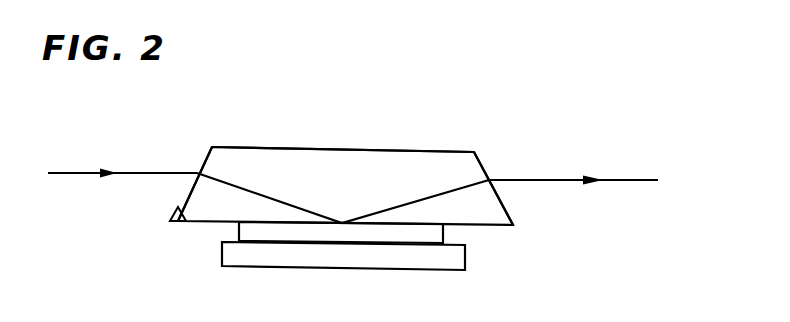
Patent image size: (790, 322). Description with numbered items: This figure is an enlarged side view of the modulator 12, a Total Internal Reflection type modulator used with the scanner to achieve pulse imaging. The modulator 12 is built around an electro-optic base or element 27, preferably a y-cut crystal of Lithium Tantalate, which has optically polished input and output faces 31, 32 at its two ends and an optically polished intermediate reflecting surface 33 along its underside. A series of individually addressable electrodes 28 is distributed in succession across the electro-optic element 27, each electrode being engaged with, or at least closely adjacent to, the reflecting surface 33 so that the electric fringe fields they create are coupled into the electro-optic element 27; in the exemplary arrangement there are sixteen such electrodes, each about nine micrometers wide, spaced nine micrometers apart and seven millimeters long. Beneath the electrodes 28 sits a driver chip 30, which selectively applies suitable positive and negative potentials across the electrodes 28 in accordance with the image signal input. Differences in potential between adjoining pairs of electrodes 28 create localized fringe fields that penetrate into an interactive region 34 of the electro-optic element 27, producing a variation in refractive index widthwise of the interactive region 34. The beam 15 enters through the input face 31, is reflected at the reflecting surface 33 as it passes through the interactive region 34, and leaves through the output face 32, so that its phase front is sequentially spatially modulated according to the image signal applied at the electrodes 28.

The modulator 12 is at (386, 108).
The beam 15 is at (82, 171).
The electro-optic element 27 is at (402, 151).
The individually addressable electrodes 28 is at (444, 228).
The driver chip 30 is at (219, 250).
The input face 31 is at (202, 160).
The output face 32 is at (487, 164).
The reflecting surface 33 is at (176, 208).
The interactive region 34 is at (275, 161).